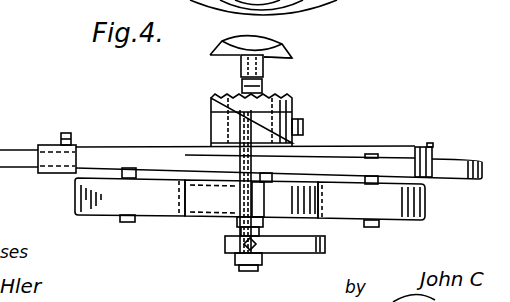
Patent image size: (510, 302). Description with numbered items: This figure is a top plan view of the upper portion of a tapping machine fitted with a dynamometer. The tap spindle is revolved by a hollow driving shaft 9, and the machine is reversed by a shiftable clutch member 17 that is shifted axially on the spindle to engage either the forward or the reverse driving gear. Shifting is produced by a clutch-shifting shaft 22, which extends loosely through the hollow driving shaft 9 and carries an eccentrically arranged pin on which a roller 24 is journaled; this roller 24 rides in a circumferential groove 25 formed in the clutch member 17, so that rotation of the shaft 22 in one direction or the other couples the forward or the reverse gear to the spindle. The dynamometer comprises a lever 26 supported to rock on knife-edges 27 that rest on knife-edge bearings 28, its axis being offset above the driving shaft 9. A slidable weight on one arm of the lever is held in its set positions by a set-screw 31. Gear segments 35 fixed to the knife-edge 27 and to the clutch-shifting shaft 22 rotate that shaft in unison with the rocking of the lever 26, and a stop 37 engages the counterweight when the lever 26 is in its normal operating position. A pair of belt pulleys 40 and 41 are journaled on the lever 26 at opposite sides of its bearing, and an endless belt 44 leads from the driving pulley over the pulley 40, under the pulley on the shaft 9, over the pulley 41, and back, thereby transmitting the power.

The driving shaft 9 is at (272, 104).
The shiftable clutch member 17 is at (268, 46).
The clutch-shifting shaft 22 is at (262, 84).
The roller 24 is at (242, 62).
The circumferential groove 25 is at (284, 63).
The lever 26 is at (332, 167).
The knife-edges 27 is at (240, 127).
The knife-edge bearings 28 is at (277, 131).
The set-screw 31 is at (66, 132).
The gear segment 35 is at (304, 253).
The stop 37 is at (433, 160).
The belt pulley 40 is at (108, 218).
The belt pulley 41 is at (394, 221).
The endless belt 44 is at (427, 205).